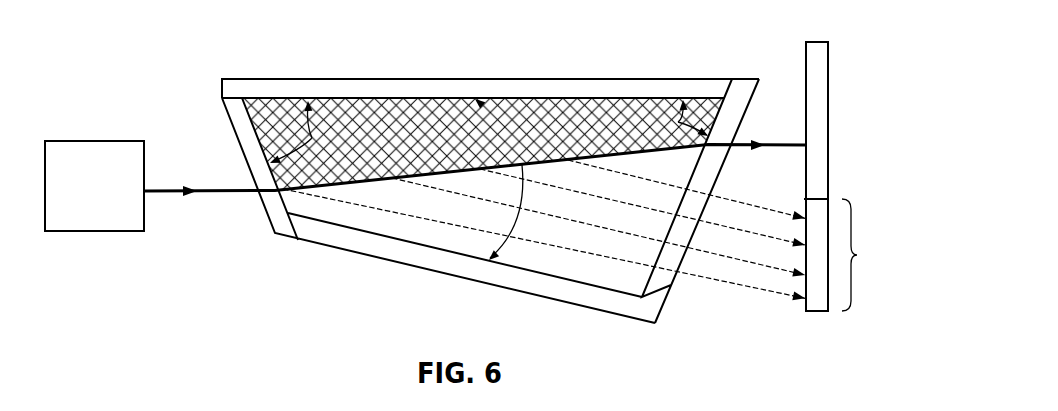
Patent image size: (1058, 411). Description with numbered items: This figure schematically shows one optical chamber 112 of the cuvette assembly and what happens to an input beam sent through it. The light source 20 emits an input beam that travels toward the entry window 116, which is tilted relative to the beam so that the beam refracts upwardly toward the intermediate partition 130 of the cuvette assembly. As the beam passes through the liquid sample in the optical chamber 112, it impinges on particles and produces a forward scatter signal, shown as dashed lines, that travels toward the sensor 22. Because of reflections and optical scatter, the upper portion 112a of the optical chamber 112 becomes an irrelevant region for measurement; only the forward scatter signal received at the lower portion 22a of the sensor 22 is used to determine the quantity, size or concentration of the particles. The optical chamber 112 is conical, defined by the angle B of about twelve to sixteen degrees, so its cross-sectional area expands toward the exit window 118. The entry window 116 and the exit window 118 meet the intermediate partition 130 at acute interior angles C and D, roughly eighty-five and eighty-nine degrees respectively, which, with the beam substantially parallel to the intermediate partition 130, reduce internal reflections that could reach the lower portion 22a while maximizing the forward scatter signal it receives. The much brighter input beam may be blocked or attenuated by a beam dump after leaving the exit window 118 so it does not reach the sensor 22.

The light source 20 is at (98, 141).
The sensor 22 is at (828, 53).
The lower portion of the sensor 22a is at (859, 255).
The optical chamber 112 is at (543, 253).
The upper portion of the optical chamber 112a is at (468, 102).
The entry window 116 is at (268, 214).
The exit window 118 is at (675, 282).
The intermediate partition 130 is at (408, 87).
The angle B is at (520, 181).
The acute interior angle C is at (312, 138).
The acute interior angle D is at (678, 122).